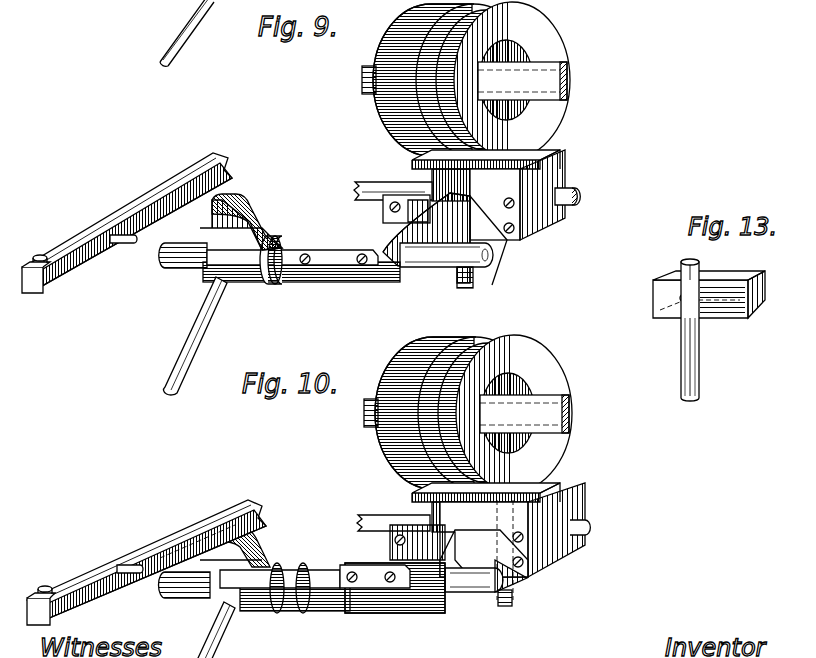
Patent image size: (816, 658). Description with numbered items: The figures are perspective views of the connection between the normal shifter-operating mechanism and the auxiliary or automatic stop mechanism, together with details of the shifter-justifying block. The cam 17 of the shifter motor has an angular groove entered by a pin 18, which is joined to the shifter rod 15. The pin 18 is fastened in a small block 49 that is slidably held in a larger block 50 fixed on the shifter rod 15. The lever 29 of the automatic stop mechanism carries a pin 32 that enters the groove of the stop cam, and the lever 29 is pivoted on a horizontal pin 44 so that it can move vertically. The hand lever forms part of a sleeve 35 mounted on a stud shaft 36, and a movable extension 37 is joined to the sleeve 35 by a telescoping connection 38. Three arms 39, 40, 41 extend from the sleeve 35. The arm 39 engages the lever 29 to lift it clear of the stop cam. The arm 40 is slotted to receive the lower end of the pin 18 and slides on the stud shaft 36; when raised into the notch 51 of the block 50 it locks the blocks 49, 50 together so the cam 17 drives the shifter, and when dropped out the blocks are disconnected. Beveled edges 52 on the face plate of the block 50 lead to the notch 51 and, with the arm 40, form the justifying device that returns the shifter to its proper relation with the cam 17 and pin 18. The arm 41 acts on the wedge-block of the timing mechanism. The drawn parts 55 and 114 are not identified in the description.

In FIG. 9, the shifter rod 15 is at (376, 186).
In FIG. 10, the shifter rod 15 is at (374, 517).
In FIG. 9, the cam of the shifter motor 17 is at (388, 117).
In FIG. 10, the cam of the shifter motor 17 is at (392, 445).
In FIG. 9, the pin 18 is at (473, 286).
In FIG. 10, the pin 18 is at (514, 600).
In FIG. 13, the pin 18 is at (700, 264).
In FIG. 9, the lever 29 is at (82, 236).
In FIG. 10, the lever 29 is at (85, 572).
In FIG. 9, the pin 32 is at (43, 257).
In FIG. 10, the pin 32 is at (48, 586).
In FIG. 9, the sleeve 35 is at (183, 255).
In FIG. 10, the sleeve 35 is at (187, 585).
In FIG. 9, the stud shaft 36 is at (445, 268).
In FIG. 10, the stud shaft 36 is at (340, 600).
In FIG. 9, the movable extension of the sleeve 37 is at (360, 275).
In FIG. 10, the movable extension of the sleeve 37 is at (425, 612).
In FIG. 10, the telescoping connection 38 is at (325, 575).
In FIG. 9, the arm 39 is at (222, 201).
In FIG. 10, the arm 39 is at (250, 547).
In FIG. 9, the arm 40 is at (383, 213).
In FIG. 10, the arm 40 is at (482, 600).
In FIG. 9, the arm 41 is at (200, 345).
In FIG. 10, the arm 41 is at (215, 642).
In FIG. 9, the horizontal pin 44 is at (125, 243).
In FIG. 9, the small block 49 is at (548, 208).
In FIG. 13, the small block 49 is at (752, 305).
In FIG. 9, the larger block 50 is at (522, 235).
In FIG. 9, the notch 51 is at (503, 203).
In FIG. 9, the beveled edges 52 is at (503, 226).
In FIG. 9, the collar 55 is at (260, 280).
In FIG. 10, the collar 55 is at (280, 610).
In FIG. 10, the pin 114 is at (128, 565).